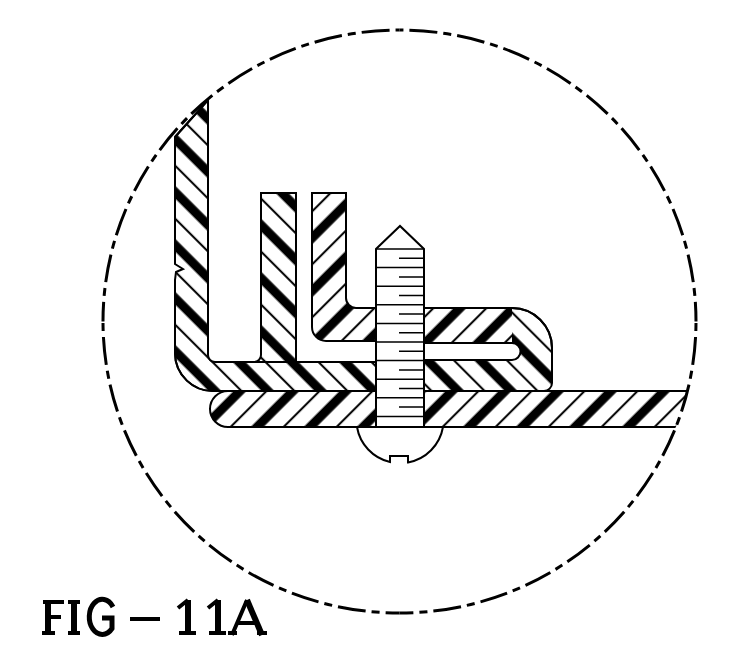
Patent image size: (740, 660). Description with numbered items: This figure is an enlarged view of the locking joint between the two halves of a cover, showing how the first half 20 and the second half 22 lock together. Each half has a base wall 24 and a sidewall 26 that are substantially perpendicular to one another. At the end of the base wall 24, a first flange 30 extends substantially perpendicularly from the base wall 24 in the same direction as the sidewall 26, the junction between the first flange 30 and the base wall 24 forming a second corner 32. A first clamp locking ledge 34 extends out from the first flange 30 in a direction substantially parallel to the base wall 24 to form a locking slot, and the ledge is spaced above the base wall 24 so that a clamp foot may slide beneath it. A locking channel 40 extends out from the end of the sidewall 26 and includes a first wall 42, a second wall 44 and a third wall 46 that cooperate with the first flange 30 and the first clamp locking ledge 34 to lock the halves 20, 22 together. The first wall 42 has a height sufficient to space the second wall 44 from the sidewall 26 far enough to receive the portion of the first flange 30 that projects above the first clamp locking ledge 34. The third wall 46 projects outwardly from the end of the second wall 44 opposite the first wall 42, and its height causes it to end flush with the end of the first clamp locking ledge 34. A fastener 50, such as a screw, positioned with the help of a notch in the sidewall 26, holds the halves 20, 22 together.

The first half 20 is at (311, 428).
The second half 22 is at (177, 305).
The base wall 24 is at (206, 147).
The sidewall 26 is at (258, 427).
The first flange 30 is at (469, 392).
The second corner 32 is at (190, 382).
The first clamp locking ledge 34 is at (265, 262).
The locking channel 40 is at (534, 310).
The first wall 42 is at (547, 368).
The second wall 44 is at (472, 314).
The third wall 46 is at (345, 232).
The fastener 50 is at (419, 449).